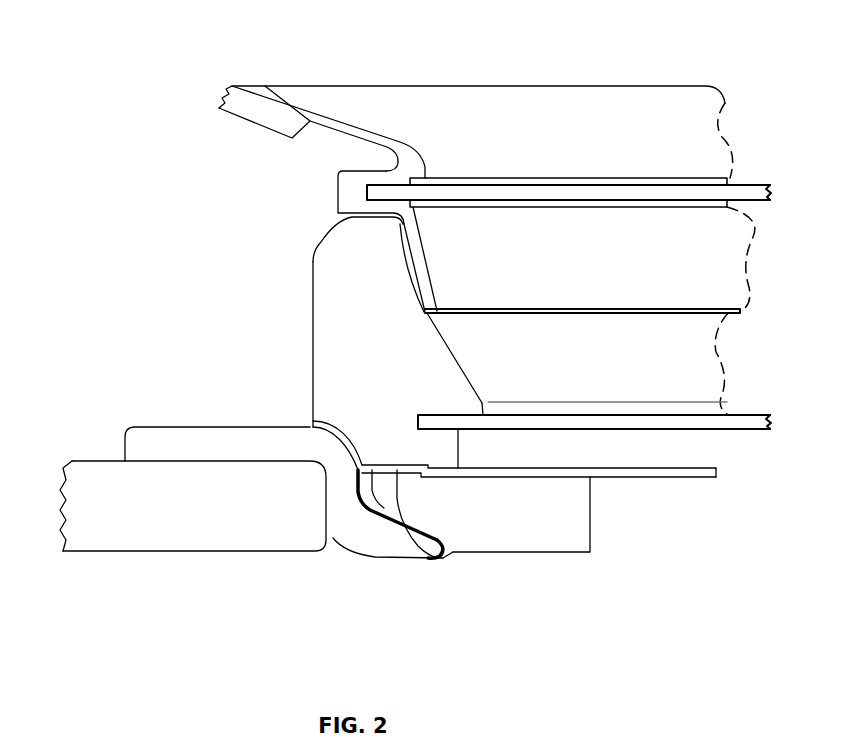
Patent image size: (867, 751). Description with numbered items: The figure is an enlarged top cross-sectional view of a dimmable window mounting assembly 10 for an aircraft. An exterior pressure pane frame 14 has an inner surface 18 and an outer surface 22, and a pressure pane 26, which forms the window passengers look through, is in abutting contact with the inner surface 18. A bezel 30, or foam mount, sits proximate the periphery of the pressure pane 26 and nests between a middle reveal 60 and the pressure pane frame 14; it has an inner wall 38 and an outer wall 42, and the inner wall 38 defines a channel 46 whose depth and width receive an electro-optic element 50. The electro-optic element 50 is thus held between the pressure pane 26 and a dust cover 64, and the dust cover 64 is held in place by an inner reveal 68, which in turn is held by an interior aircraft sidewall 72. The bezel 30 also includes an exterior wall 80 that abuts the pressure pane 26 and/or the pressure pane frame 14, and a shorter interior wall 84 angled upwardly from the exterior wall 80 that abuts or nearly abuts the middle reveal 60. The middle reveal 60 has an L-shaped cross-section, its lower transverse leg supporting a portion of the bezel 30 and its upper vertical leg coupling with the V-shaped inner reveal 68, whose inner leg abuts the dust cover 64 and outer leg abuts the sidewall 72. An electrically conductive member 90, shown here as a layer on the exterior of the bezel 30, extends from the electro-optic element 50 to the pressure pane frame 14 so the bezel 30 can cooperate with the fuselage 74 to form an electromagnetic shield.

The dimmable window mounting assembly 10 is at (118, 74).
The exterior pressure pane frame 14 is at (375, 535).
The inner surface 18 is at (152, 427).
The outer surface 22 is at (337, 542).
The pressure pane 26 is at (522, 520).
The bezel 30 is at (352, 262).
The inner wall 38 is at (455, 343).
The outer wall 42 is at (313, 290).
The channel 46 is at (418, 413).
The electro-optic element 50 is at (744, 414).
The middle reveal 60 is at (430, 262).
The dust cover 64 is at (742, 185).
The inner reveal 68 is at (350, 113).
The interior aircraft sidewall 72 is at (235, 110).
The fuselage 74 is at (147, 515).
The exterior wall 80 is at (418, 558).
The interior wall 84 is at (365, 210).
The electrically conductive member 90 is at (311, 422).